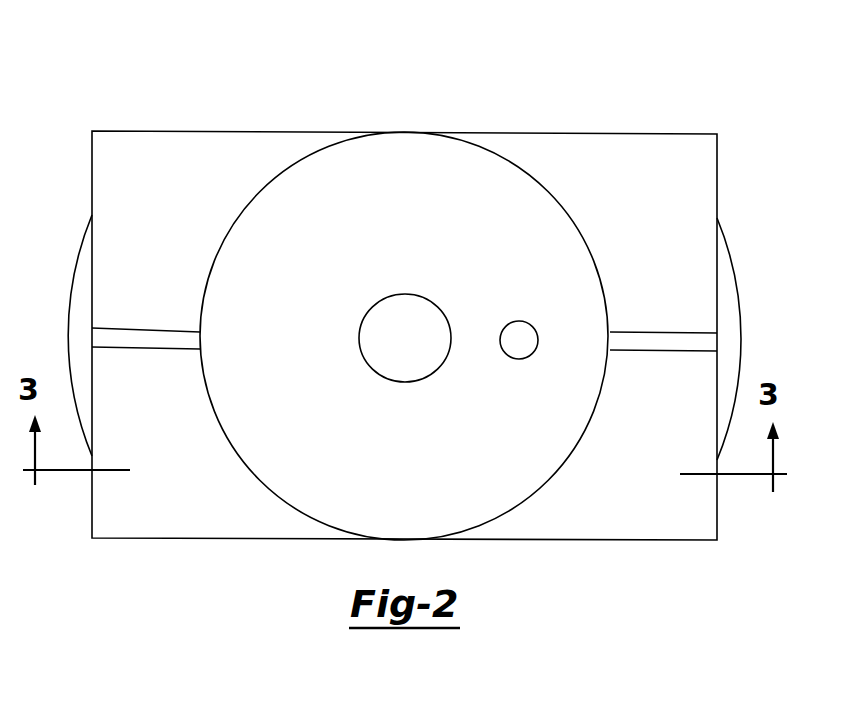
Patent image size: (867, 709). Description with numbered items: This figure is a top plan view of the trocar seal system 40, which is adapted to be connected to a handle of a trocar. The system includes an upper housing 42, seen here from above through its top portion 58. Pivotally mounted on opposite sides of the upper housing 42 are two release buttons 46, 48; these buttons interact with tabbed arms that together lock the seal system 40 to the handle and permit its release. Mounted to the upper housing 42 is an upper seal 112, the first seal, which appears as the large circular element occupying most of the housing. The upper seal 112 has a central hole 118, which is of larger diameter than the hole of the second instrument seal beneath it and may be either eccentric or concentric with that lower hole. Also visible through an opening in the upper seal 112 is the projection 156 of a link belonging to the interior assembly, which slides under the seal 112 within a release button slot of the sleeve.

The trocar seal system 40 is at (406, 297).
The upper housing 42 is at (140, 131).
The release button 46 is at (733, 281).
The release button 48 is at (75, 273).
The top portion 58 is at (653, 146).
The upper seal 112 is at (312, 445).
The hole 118 is at (445, 322).
The projection 156 is at (518, 338).